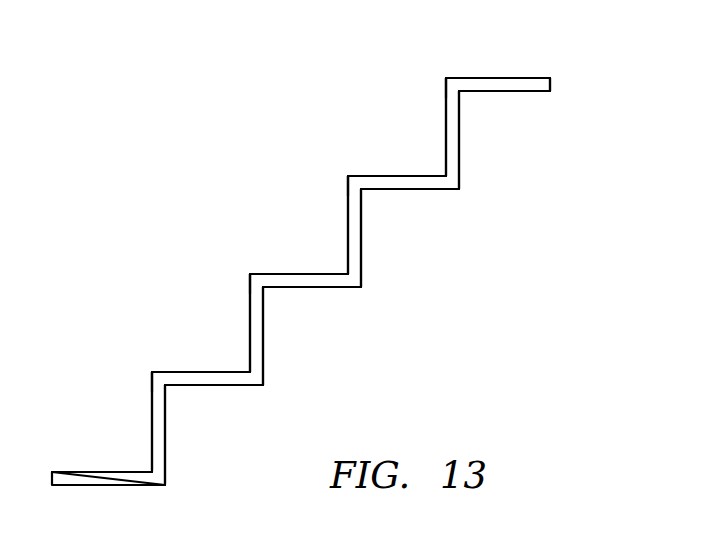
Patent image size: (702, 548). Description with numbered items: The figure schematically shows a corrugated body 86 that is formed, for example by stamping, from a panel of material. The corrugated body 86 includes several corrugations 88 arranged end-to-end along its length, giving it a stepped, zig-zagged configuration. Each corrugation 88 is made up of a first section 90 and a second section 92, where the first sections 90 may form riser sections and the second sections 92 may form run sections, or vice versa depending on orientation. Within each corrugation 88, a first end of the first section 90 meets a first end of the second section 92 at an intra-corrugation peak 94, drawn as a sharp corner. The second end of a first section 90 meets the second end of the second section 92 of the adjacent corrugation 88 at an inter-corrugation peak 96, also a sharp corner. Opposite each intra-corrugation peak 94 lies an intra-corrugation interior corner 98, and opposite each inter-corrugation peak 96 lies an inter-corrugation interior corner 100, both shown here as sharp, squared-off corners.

The corrugated body 86 is at (198, 174).
The corrugation 88 is at (146, 377).
The first section 90 is at (150, 415).
The second section 92 is at (131, 487).
The intra-corrugation peak 94 is at (151, 372).
The inter-corrugation peak 96 is at (166, 485).
The intra-corrugation interior corner 98 is at (167, 390).
The inter-corrugation interior corner 100 is at (150, 468).